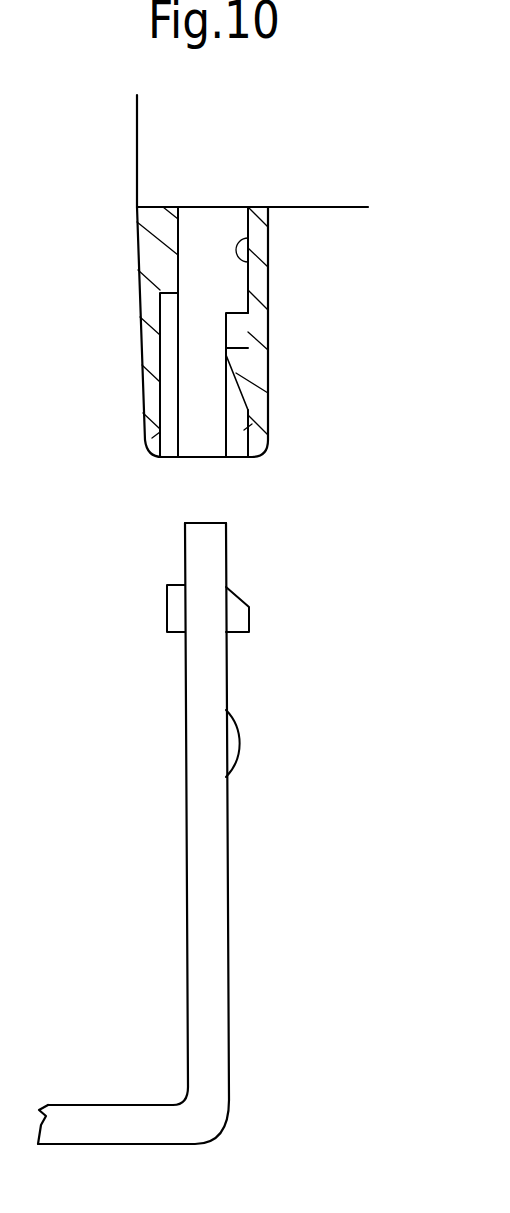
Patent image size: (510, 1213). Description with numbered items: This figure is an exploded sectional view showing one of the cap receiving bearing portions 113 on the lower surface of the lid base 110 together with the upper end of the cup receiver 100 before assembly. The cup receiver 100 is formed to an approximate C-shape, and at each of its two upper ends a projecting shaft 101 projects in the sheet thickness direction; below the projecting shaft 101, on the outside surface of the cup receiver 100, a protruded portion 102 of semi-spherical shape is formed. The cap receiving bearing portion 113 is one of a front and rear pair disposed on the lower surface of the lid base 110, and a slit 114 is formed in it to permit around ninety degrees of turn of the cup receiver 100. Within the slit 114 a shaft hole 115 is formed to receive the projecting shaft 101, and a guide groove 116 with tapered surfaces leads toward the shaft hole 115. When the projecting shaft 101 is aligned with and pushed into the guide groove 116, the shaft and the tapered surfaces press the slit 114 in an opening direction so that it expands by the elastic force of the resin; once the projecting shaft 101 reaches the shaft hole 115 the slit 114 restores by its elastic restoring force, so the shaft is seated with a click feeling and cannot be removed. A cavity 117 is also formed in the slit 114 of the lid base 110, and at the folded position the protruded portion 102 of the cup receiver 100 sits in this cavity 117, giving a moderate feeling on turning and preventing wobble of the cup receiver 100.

The cup receiver 100 is at (215, 902).
The projecting shaft 101 is at (240, 623).
The protruded portion 102 is at (240, 743).
The lid base 110 is at (160, 152).
The cap receiving bearing portion 113 is at (260, 365).
The slit 114 is at (208, 253).
The shaft hole 115 is at (235, 332).
The guide groove 116 is at (163, 432).
The cavity 117 is at (249, 262).